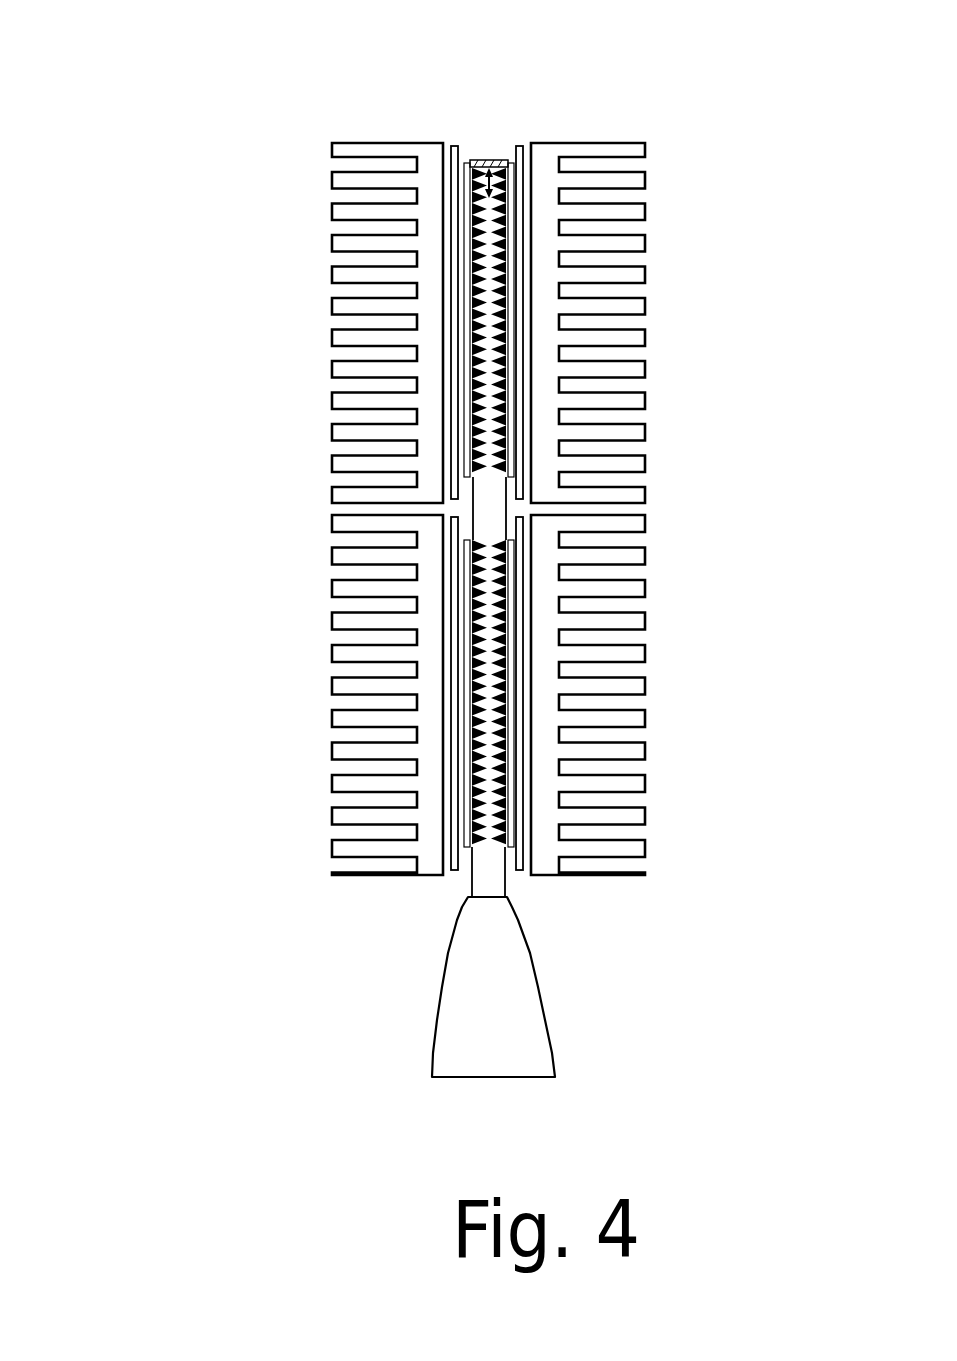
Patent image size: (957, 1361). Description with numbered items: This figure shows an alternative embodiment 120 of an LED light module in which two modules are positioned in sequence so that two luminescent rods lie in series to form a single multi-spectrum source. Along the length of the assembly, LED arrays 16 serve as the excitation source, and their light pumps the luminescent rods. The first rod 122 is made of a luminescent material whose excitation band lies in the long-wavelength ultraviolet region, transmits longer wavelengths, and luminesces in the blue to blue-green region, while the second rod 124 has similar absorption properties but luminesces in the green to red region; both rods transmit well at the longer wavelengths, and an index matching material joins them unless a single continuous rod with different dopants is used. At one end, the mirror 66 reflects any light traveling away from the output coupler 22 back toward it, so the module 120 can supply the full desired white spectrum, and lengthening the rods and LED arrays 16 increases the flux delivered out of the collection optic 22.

The alternative embodiment of LED module 120 is at (218, 278).
The LED array 16 is at (467, 162).
The mirror 66 is at (493, 162).
The rod 122 is at (492, 508).
The rod 124 is at (492, 872).
The output coupler 22 is at (497, 1002).